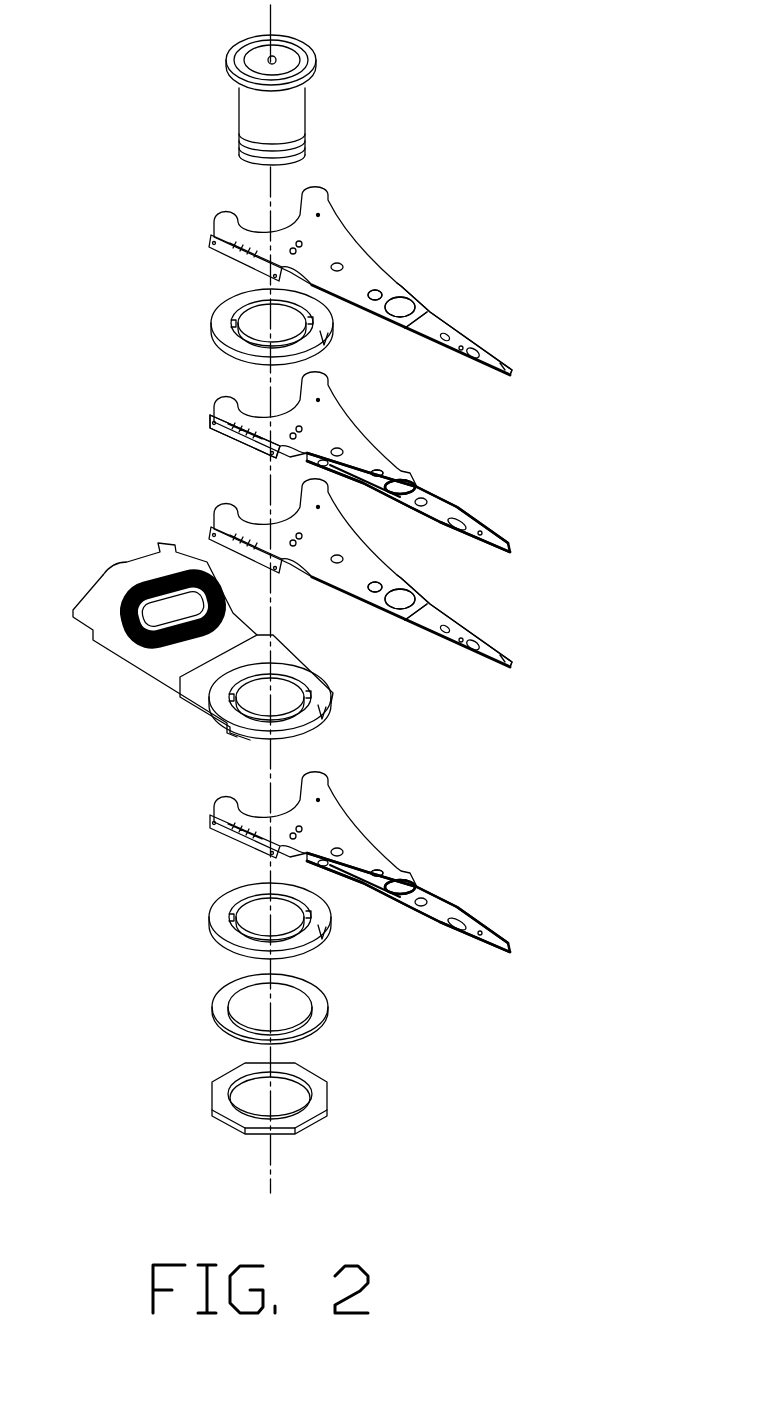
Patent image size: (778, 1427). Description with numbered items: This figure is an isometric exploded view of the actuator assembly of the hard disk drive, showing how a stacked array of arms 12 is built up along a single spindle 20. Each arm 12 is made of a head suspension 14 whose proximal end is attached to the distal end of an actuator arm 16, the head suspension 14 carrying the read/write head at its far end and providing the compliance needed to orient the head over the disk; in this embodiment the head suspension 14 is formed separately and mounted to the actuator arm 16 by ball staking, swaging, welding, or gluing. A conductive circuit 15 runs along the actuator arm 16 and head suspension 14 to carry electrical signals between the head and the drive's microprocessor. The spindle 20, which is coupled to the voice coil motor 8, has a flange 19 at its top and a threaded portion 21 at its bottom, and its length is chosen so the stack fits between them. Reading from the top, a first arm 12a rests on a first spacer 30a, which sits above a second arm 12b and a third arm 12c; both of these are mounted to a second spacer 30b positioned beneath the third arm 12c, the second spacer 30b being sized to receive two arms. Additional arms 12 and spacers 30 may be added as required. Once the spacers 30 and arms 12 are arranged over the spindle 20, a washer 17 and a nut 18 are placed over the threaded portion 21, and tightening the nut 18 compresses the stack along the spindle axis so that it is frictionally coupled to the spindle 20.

The voice coil motor 8 is at (125, 640).
The arm 12 is at (457, 867).
The first arm 12a is at (382, 212).
The second arm 12b is at (412, 435).
The third arm 12c is at (475, 605).
The head suspension 14 is at (437, 323).
The conductive circuit 15 is at (217, 427).
The actuator arm 16 is at (375, 303).
The washer 17 is at (317, 1012).
The nut 18 is at (327, 1102).
The flange 19 is at (232, 72).
The spindle 20 is at (307, 50).
The threaded portion 21 is at (305, 145).
The spacer 30 is at (212, 930).
The first spacer 30a is at (212, 332).
The second spacer 30b is at (247, 737).